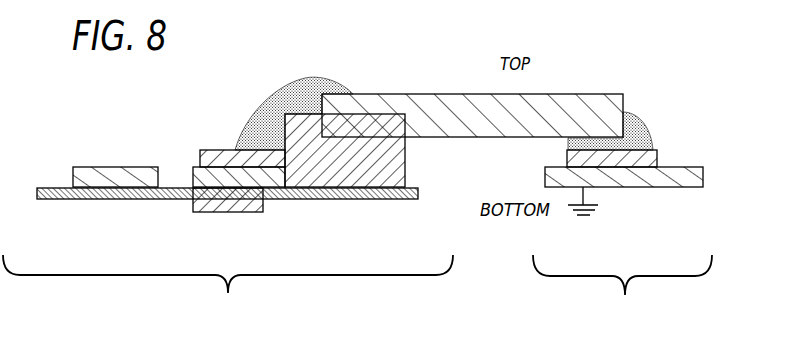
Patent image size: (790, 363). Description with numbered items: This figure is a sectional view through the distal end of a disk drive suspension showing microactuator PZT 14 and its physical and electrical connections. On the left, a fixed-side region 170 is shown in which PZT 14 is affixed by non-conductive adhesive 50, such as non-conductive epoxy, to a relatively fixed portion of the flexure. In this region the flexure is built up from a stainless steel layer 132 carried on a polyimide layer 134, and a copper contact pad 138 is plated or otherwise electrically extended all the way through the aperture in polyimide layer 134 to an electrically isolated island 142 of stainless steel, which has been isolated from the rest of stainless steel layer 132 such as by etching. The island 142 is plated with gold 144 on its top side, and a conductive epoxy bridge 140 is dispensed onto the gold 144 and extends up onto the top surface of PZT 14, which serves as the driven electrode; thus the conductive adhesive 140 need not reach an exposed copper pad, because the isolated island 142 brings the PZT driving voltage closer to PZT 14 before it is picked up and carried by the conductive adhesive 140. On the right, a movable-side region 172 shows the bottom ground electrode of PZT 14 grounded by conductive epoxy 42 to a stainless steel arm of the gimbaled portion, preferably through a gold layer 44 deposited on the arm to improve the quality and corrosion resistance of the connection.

The PZT 14 is at (426, 93).
The conductive epoxy 42 is at (637, 115).
The gold layer 44 is at (657, 155).
The non-conductive adhesive 50 is at (405, 153).
The stainless steel layer 132 is at (72, 172).
The polyimide layer 134 is at (63, 200).
The copper contact pad 138 is at (238, 212).
The conductive epoxy bridge 140 is at (275, 97).
The isolated island of stainless steel 142 is at (193, 172).
The gold plating 144 is at (213, 148).
The first assembly region 170 is at (228, 290).
The second assembly region 172 is at (622, 291).